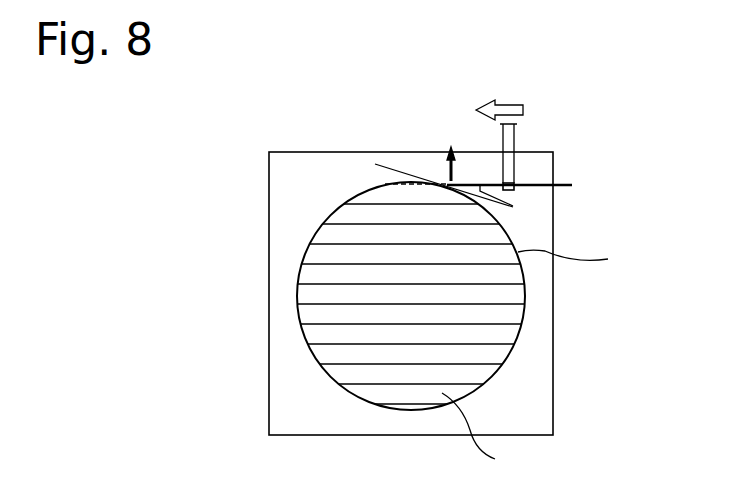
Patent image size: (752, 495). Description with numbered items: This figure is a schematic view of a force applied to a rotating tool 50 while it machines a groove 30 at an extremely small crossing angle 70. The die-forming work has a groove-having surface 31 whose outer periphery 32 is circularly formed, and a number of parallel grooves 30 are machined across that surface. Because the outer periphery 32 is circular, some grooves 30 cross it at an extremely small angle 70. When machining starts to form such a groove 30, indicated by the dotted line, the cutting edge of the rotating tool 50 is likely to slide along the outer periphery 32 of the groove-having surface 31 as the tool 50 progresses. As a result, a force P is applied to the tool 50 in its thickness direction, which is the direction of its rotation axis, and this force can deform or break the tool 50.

The groove 30 is at (493, 344).
The groove-having surface 31 is at (481, 430).
The outer periphery 32 is at (576, 258).
The rotating tool 50 is at (544, 183).
The extremely small angle 70 is at (514, 205).